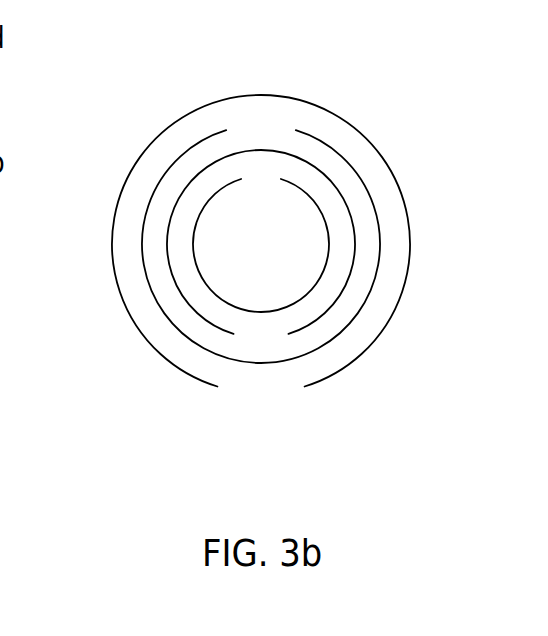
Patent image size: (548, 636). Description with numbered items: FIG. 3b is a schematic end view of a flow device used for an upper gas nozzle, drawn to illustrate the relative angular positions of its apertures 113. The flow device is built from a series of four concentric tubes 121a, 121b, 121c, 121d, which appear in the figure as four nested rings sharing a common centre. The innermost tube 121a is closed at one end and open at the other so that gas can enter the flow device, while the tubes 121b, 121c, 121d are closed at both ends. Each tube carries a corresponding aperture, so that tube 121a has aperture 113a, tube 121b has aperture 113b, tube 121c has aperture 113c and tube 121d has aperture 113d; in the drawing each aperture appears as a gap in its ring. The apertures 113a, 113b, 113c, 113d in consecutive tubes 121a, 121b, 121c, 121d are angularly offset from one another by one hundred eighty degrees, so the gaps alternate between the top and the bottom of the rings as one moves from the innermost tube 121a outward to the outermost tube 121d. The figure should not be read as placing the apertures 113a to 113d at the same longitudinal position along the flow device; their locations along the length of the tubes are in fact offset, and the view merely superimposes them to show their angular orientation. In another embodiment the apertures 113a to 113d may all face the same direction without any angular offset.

The apertures 113 is at (237, 92).
The aperture 113a is at (258, 178).
The aperture 113b is at (258, 333).
The aperture 113c is at (263, 130).
The aperture 113d is at (257, 387).
The tube 121a is at (215, 300).
The tube 121b is at (172, 290).
The tube 121c is at (140, 225).
The tube 121d is at (145, 148).